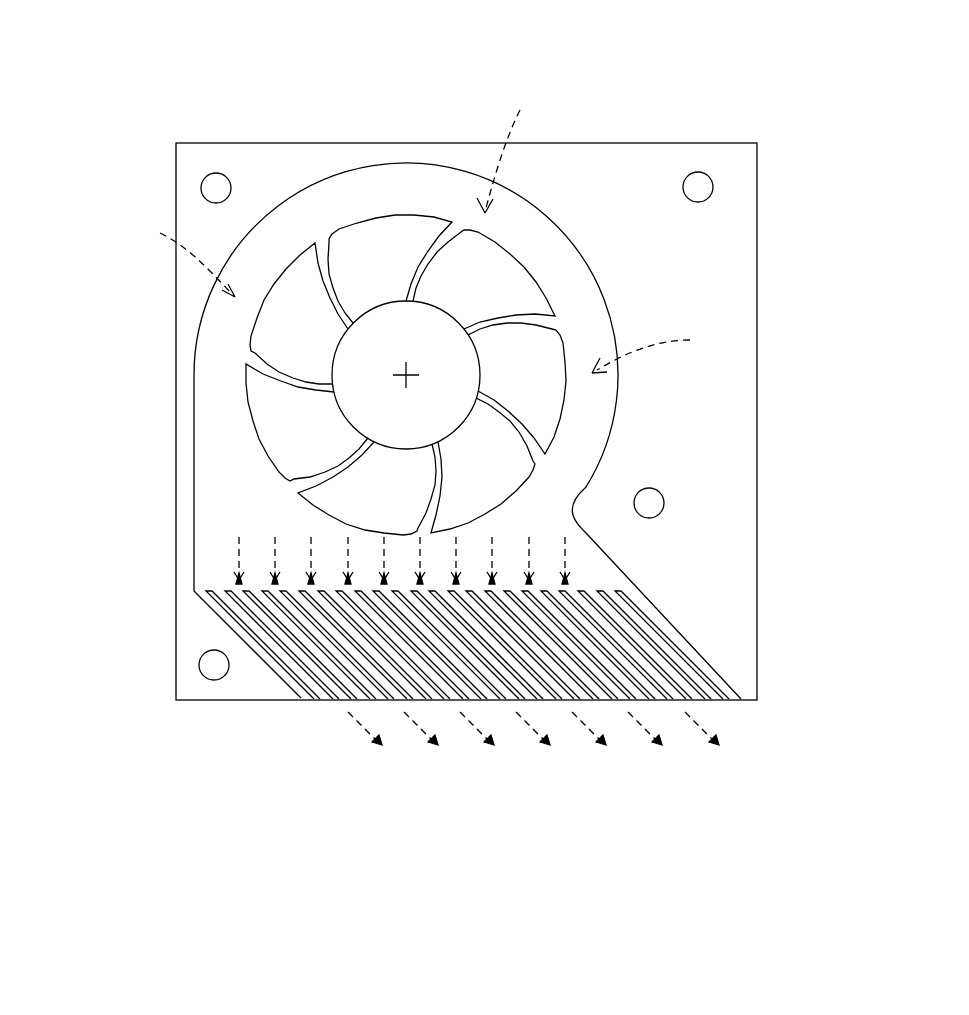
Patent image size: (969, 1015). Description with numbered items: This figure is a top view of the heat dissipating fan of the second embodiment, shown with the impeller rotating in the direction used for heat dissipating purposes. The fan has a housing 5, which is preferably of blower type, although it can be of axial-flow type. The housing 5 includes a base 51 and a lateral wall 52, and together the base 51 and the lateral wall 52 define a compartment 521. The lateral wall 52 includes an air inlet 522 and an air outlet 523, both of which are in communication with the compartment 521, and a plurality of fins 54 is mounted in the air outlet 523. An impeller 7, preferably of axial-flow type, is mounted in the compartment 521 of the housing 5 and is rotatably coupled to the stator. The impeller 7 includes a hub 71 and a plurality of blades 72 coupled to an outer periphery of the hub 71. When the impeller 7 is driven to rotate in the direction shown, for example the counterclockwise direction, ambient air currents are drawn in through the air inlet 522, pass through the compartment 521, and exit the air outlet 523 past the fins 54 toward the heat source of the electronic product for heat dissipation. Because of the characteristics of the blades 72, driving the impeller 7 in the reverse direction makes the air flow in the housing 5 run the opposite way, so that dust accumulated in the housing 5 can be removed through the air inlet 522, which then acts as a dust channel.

The housing 5 is at (417, 480).
The base 51 is at (420, 372).
The lateral wall 52 is at (184, 492).
The compartment 521 is at (207, 354).
The air inlet 522 is at (600, 257).
The air outlet 523 is at (548, 715).
The fins 54 is at (383, 692).
The impeller 7 is at (322, 308).
The hub 71 is at (393, 330).
The blades 72 is at (260, 327).